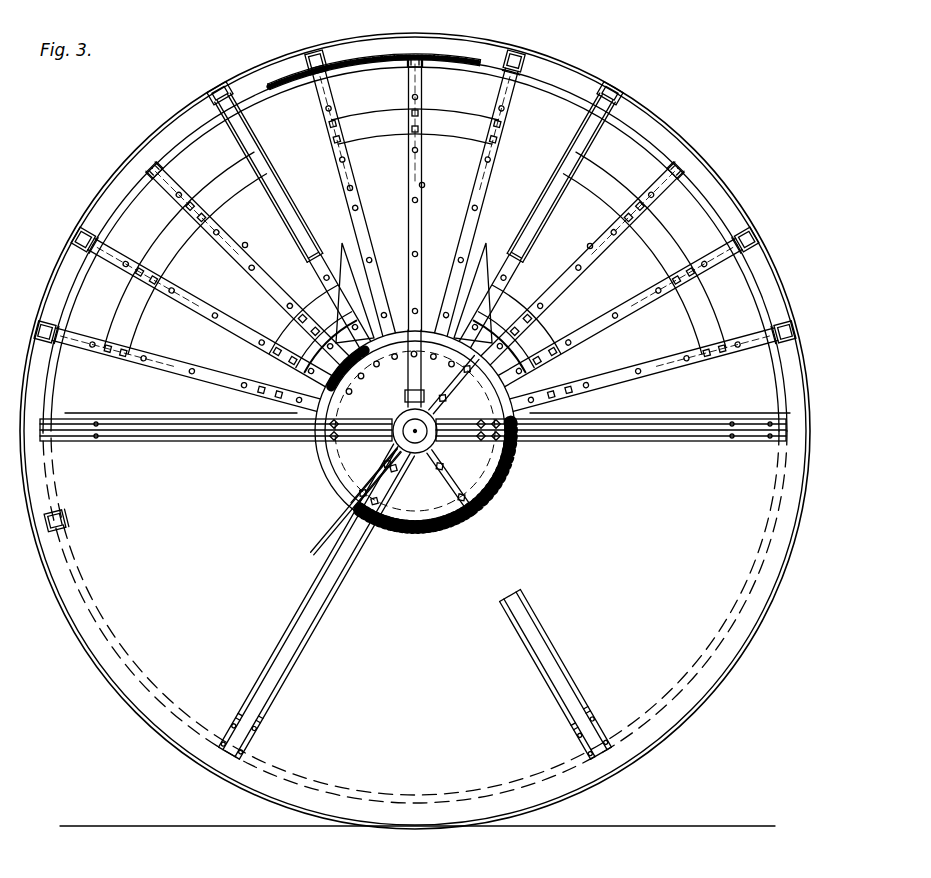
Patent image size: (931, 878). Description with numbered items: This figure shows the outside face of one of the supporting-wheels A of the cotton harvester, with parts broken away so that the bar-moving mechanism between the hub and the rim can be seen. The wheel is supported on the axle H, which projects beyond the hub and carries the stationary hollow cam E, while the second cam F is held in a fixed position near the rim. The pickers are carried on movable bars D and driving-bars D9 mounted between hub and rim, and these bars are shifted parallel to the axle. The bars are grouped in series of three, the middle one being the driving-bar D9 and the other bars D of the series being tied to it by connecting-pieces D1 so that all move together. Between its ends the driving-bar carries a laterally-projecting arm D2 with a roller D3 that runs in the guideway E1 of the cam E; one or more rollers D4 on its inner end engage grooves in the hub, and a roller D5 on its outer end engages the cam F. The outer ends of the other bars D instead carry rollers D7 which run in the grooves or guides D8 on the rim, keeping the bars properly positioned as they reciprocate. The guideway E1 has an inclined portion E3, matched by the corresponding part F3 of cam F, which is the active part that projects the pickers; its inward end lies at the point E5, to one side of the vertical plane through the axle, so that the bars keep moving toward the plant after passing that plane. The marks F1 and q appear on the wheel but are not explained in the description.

The supporting-wheel A is at (415, 431).
The cam F is at (415, 431).
The rim band F1 is at (374, 80).
The inclined part of cam F F3 is at (415, 431).
The movable bar D is at (415, 249).
The connecting-piece D1 is at (415, 255).
The laterally-projecting arm D2 is at (434, 282).
The roller D3 is at (403, 301).
The engaging device or roller D4 is at (342, 502).
The roller D5 is at (420, 144).
The engaging device or roller D7 is at (415, 174).
The grooves or guides D8 is at (415, 390).
The driving-bar D9 is at (417, 215).
The cam E is at (438, 425).
The guideway E1 is at (292, 365).
The inclined portion of guideway E3 is at (367, 431).
The point of maximum inward position E5 is at (435, 510).
The axle H is at (410, 503).
The pivot q is at (324, 102).